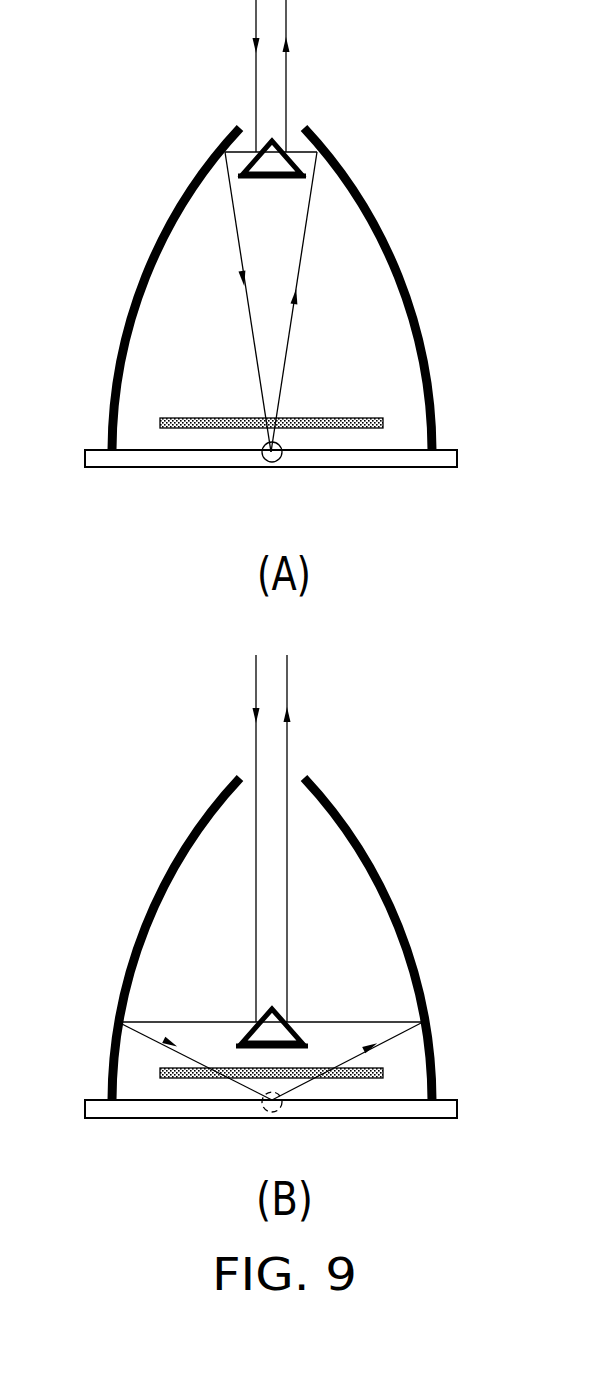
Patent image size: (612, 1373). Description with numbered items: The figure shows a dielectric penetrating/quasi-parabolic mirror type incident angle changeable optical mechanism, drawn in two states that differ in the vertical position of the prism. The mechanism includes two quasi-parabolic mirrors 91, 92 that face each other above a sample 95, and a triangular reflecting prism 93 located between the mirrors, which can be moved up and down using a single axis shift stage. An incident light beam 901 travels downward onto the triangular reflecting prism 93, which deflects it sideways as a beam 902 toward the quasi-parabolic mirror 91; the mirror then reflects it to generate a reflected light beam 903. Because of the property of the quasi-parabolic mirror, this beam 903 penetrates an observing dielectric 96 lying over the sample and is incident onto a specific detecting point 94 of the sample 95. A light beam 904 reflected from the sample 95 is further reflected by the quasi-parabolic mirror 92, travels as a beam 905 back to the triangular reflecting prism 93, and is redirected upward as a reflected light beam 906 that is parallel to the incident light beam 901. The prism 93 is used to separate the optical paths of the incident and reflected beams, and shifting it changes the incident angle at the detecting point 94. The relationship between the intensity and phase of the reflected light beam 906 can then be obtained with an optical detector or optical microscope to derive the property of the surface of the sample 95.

The quasi-parabolic mirror 91 is at (141, 272).
The quasi-parabolic mirror 92 is at (403, 272).
The triangular reflecting prism 93 is at (262, 179).
The detecting point 94 is at (276, 465).
The sample 95 is at (415, 460).
The observing dielectric 96 is at (350, 425).
The incident light beam 901 is at (226, 511).
The light reflected toward left reflector 902 is at (235, 152).
The reflected light beam 903 is at (192, 626).
The light beam reflected from the sample 904 is at (349, 626).
The light reflected from right reflector 905 is at (308, 152).
The reflected light beam 906 is at (319, 511).